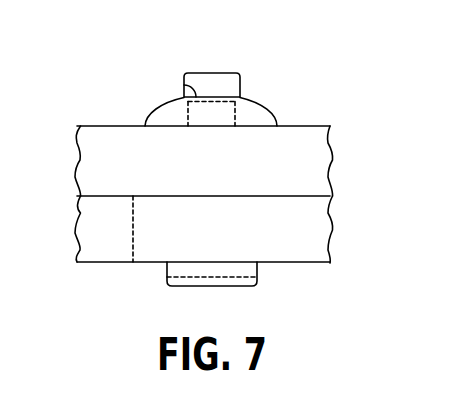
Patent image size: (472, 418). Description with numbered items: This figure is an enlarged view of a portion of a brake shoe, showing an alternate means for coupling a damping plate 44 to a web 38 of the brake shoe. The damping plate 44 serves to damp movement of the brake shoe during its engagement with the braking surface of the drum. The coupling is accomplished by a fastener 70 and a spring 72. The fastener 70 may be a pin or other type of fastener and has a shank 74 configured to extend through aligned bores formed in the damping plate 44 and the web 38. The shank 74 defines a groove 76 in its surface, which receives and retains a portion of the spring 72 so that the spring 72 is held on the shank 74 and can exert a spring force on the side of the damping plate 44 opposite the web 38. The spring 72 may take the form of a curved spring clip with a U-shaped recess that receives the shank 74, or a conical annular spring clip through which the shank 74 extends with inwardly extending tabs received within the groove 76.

The fastener 70 is at (211, 84).
The spring 72 is at (252, 117).
The shank 74 is at (207, 113).
The groove 76 is at (181, 83).
The damping plate 44 is at (307, 162).
The web 38 is at (307, 228).